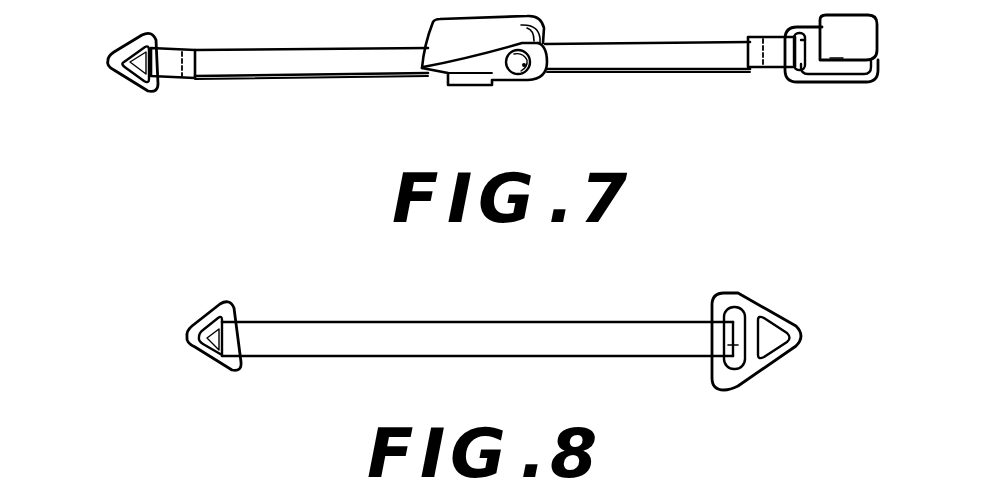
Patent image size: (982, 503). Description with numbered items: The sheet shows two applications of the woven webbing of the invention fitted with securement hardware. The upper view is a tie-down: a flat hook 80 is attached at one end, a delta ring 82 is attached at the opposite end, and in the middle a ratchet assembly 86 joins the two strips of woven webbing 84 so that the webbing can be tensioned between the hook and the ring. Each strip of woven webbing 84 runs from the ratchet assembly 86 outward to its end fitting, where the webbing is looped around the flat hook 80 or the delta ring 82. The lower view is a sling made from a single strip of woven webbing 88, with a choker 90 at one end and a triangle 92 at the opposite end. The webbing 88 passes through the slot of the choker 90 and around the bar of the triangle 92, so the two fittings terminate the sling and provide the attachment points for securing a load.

In FIG. 7, the flat hook 80 is at (836, 66).
In FIG. 7, the delta ring 82 is at (117, 84).
In FIG. 7, the strips of woven webbing 84 is at (310, 80).
In FIG. 7, the ratchet assembly 86 is at (485, 60).
In FIG. 8, the strip of woven webbing 88 is at (540, 347).
In FIG. 8, the choker 90 is at (765, 364).
In FIG. 8, the triangle 92 is at (208, 366).